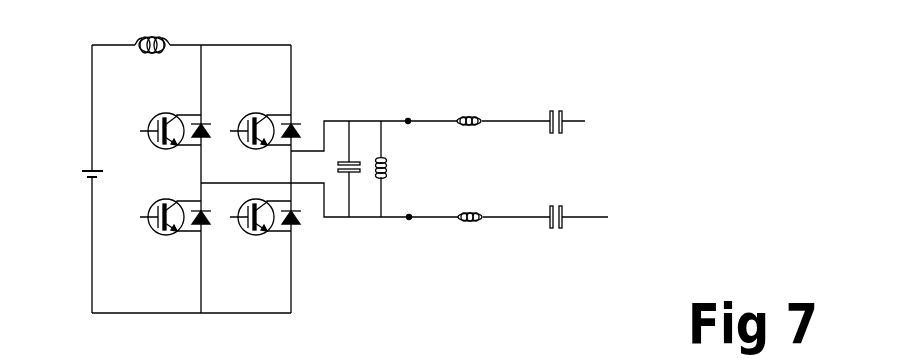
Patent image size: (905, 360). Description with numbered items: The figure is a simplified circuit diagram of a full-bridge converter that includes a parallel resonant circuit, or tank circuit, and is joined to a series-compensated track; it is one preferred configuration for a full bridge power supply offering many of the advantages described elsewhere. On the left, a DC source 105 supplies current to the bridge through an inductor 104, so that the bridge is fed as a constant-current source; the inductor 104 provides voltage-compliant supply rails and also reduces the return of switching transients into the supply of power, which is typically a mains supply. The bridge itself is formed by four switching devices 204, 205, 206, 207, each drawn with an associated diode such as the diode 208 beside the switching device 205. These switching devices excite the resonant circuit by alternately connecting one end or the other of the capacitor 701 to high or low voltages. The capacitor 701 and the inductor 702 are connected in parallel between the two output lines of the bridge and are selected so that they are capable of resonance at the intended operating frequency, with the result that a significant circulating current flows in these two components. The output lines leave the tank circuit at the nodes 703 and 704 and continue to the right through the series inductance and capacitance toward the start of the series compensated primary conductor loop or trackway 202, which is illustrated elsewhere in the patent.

The inductor 104 is at (160, 38).
The DC source 105 is at (73, 160).
The series compensated primary conductor loop 202 is at (575, 48).
The switching device 204 is at (175, 80).
The switching device 205 is at (265, 80).
The switching device 206 is at (163, 236).
The switching device 207 is at (253, 236).
The freewheeling diode 208 is at (361, 88).
The capacitor 701 is at (360, 165).
The inductor 702 is at (386, 168).
The output node 703 is at (418, 84).
The output node 704 is at (409, 219).